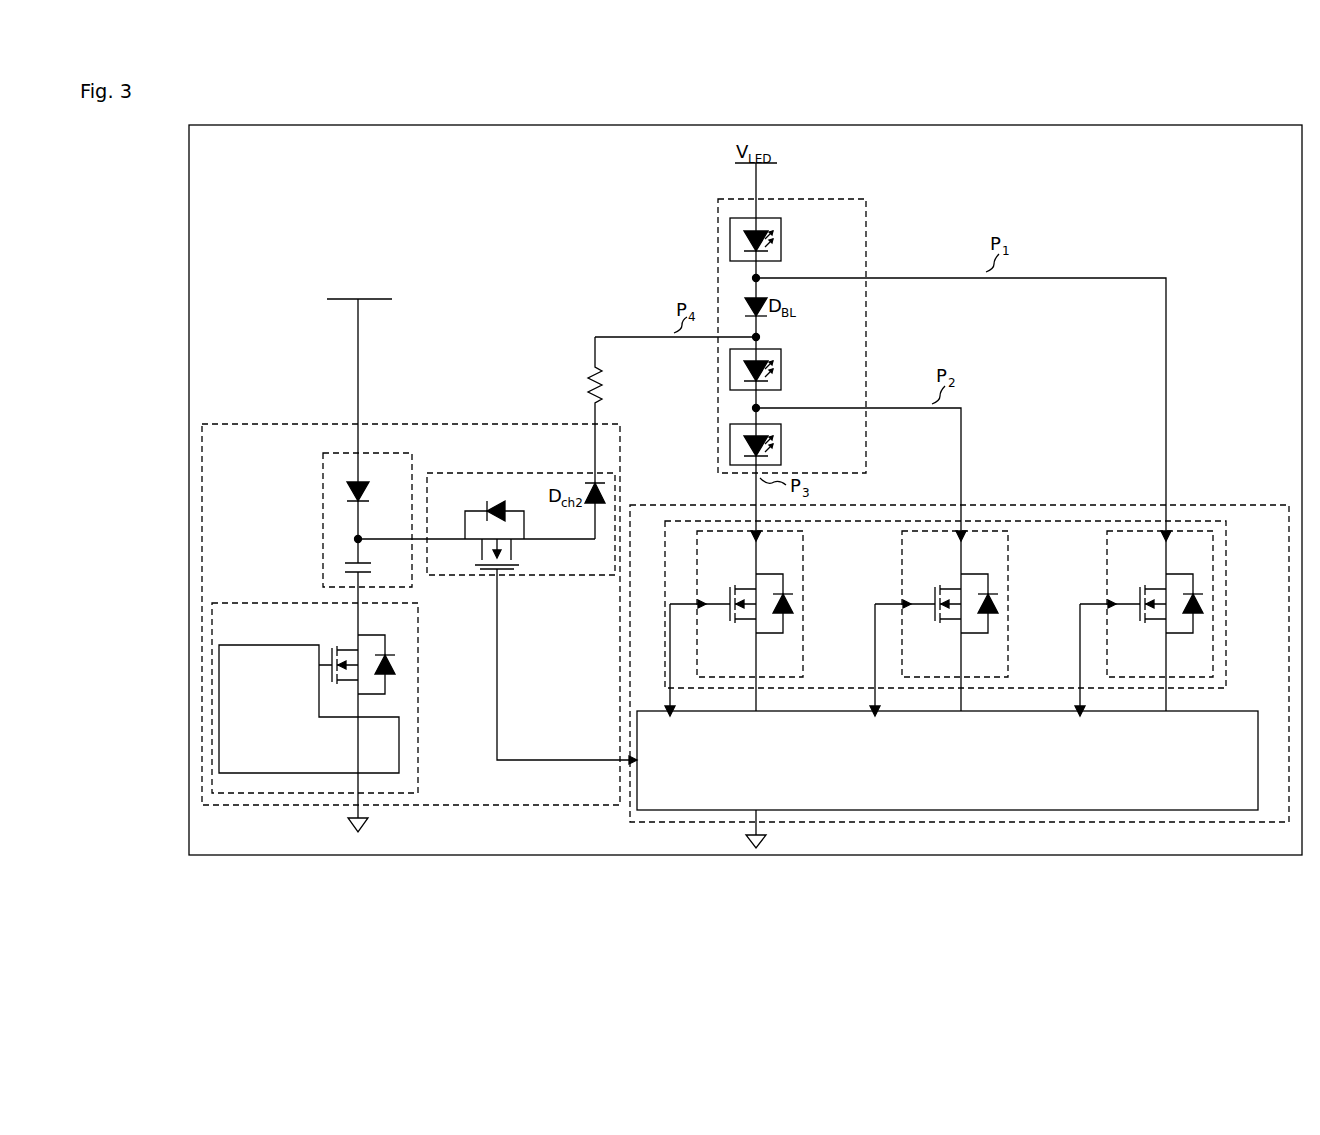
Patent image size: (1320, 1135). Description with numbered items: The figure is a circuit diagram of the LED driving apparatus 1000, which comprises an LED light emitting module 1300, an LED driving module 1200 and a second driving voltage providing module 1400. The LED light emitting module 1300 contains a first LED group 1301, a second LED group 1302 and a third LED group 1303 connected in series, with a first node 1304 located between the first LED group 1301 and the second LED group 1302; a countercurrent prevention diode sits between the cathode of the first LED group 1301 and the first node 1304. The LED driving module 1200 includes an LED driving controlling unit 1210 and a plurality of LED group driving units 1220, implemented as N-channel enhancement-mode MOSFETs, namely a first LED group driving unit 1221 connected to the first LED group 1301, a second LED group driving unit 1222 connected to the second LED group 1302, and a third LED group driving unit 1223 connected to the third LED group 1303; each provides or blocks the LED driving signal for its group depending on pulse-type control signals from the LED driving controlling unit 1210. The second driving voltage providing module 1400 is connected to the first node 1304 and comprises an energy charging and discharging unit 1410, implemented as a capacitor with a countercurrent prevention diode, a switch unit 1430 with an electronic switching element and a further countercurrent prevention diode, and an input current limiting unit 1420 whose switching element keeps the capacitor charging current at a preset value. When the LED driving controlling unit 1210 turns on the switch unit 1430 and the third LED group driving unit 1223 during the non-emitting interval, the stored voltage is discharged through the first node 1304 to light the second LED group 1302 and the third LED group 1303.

The LED driving apparatus 1000 is at (785, 126).
The LED light emitting module 1300 is at (828, 199).
The first LED group 1301 is at (781, 222).
The second LED group 1302 is at (781, 355).
The third LED group 1303 is at (781, 428).
The first node 1304 is at (760, 337).
The second driving voltage providing module 1400 is at (483, 424).
The energy charging and discharging unit 1410 is at (323, 475).
The input current limiting unit 1420 is at (258, 603).
The switch unit 1430 is at (524, 473).
The LED driving module 1200 is at (1262, 505).
The LED driving controlling unit 1210 is at (1258, 711).
The LED group driving units 1220 is at (1124, 521).
The first LED group driving unit 1221 is at (1213, 550).
The second LED group driving unit 1222 is at (1008, 550).
The third LED group driving unit 1223 is at (803, 550).